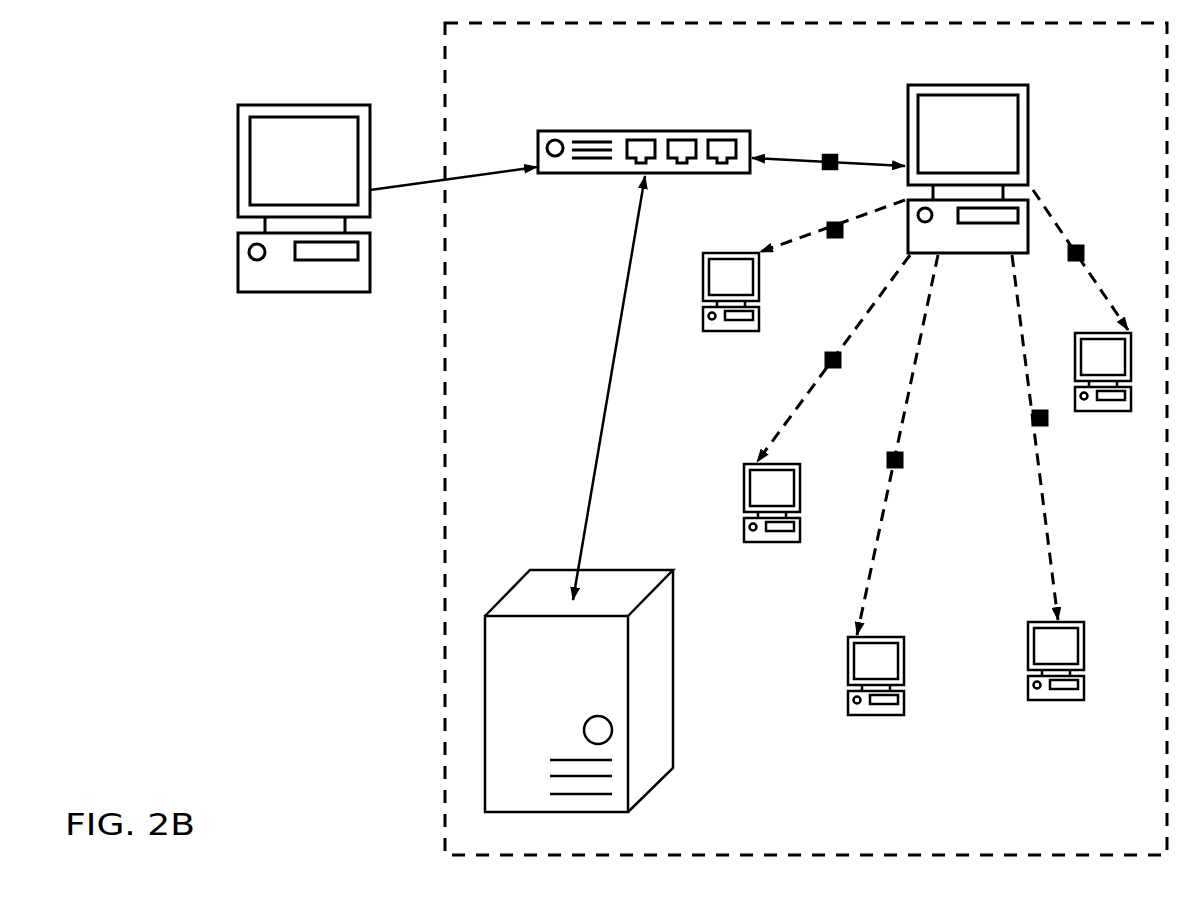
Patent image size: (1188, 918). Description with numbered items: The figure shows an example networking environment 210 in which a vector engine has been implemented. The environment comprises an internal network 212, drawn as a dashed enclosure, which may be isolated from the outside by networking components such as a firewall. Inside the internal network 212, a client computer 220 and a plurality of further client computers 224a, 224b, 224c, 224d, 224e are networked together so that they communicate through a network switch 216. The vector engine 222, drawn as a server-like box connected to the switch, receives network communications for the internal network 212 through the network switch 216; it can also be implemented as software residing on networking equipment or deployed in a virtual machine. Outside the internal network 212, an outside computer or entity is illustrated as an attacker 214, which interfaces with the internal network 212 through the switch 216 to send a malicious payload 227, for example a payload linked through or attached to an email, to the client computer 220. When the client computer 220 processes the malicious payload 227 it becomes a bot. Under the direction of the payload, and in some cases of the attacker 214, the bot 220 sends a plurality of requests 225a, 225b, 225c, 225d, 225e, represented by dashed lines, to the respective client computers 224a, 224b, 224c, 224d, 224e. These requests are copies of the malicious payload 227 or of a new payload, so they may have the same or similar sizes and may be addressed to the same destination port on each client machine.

The networking environment 210 is at (255, 595).
The internal network 212 is at (806, 439).
The attacker 214 is at (384, 213).
The network switch 216 is at (644, 353).
The client computer (bot) 220 is at (970, 155).
The vector engine 222 is at (579, 691).
The client computer 224a is at (732, 317).
The client computer 224b is at (772, 528).
The client computer 224c is at (876, 701).
The client computer 224d is at (1058, 685).
The client computer 224e is at (1105, 396).
The request 225a is at (832, 223).
The request 225b is at (833, 358).
The request 225c is at (895, 445).
The request 225d is at (1032, 437).
The request 225e is at (1080, 260).
The malicious payload 227 is at (828, 149).